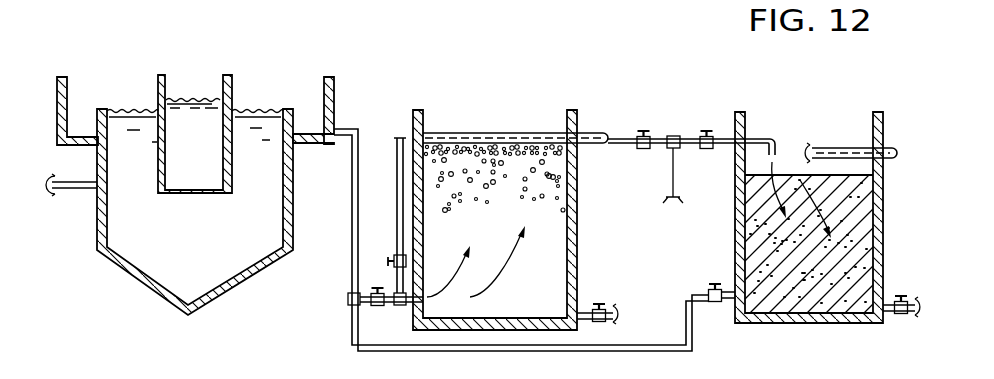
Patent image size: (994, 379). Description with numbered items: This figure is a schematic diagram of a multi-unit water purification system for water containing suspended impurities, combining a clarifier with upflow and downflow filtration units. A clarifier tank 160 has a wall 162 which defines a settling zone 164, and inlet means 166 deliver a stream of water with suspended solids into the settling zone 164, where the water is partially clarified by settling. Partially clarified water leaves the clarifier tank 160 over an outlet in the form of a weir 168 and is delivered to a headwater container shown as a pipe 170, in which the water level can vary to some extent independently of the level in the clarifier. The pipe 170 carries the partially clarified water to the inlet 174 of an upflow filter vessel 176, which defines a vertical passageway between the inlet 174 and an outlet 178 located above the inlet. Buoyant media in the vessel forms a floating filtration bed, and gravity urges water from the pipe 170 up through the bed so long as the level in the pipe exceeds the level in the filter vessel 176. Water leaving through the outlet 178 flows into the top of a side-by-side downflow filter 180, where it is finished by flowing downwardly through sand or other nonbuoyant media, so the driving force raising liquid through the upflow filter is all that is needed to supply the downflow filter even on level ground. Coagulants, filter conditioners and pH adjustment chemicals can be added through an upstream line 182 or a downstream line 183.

The clarifier tank 160 is at (190, 193).
The wall 162 is at (293, 203).
The settling zone 164 is at (200, 210).
The inlet means 166 is at (197, 100).
The weir 168 is at (287, 110).
The pipe 170 is at (350, 260).
The inlet 174 is at (425, 297).
The upflow filter vessel 176 is at (575, 257).
The outlet 178 is at (560, 133).
The downflow filter 180 is at (775, 327).
The upstream line 182 is at (398, 162).
The downstream line 183 is at (670, 178).